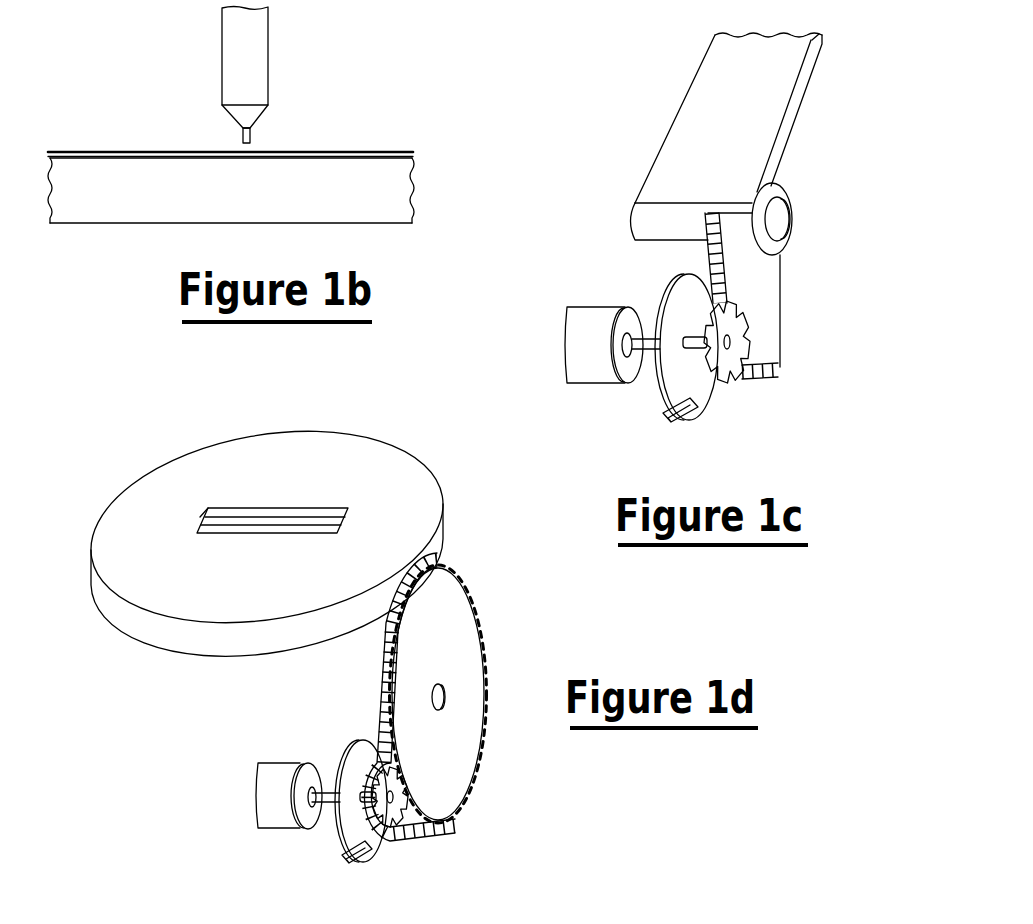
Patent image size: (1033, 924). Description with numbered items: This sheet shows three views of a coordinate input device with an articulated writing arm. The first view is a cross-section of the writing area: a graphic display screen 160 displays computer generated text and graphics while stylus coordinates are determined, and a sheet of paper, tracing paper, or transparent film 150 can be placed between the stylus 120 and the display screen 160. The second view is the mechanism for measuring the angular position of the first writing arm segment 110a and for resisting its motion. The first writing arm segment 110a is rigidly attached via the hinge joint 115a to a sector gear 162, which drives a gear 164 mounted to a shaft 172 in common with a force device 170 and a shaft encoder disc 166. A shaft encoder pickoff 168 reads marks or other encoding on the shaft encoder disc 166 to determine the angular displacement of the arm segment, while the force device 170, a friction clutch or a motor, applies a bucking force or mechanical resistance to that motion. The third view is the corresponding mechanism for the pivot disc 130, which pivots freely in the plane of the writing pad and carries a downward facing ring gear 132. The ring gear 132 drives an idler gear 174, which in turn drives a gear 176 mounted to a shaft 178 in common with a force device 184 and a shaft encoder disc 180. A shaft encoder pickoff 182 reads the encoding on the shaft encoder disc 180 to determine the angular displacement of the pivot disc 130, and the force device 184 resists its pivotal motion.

In FIG. 1B, the stylus 120 is at (268, 42).
In FIG. 1B, the transparent film 150 is at (338, 151).
In FIG. 1B, the graphic display screen 160 is at (247, 208).
In FIG. 1C, the first writing arm segment 110a is at (667, 138).
In FIG. 1C, the hinge joint 115a is at (630, 215).
In FIG. 1C, the sector gear 162 is at (780, 293).
In FIG. 1C, the gear 164 is at (730, 380).
In FIG. 1C, the shaft encoder disc 166 is at (670, 282).
In FIG. 1C, the shaft encoder pickoff 168 is at (688, 422).
In FIG. 1C, the force device 170 is at (593, 385).
In FIG. 1C, the shaft 172 is at (650, 352).
In FIG. 1D, the pivot disc 130 is at (267, 530).
In FIG. 1D, the ring gear 132 is at (430, 565).
In FIG. 1D, the idler gear 174 is at (468, 798).
In FIG. 1D, the gear 176 is at (400, 828).
In FIG. 1D, the shaft 178 is at (333, 805).
In FIG. 1D, the shaft encoder disc 180 is at (353, 743).
In FIG. 1D, the shaft encoder pickoff 182 is at (367, 863).
In FIG. 1D, the force device 184 is at (257, 777).